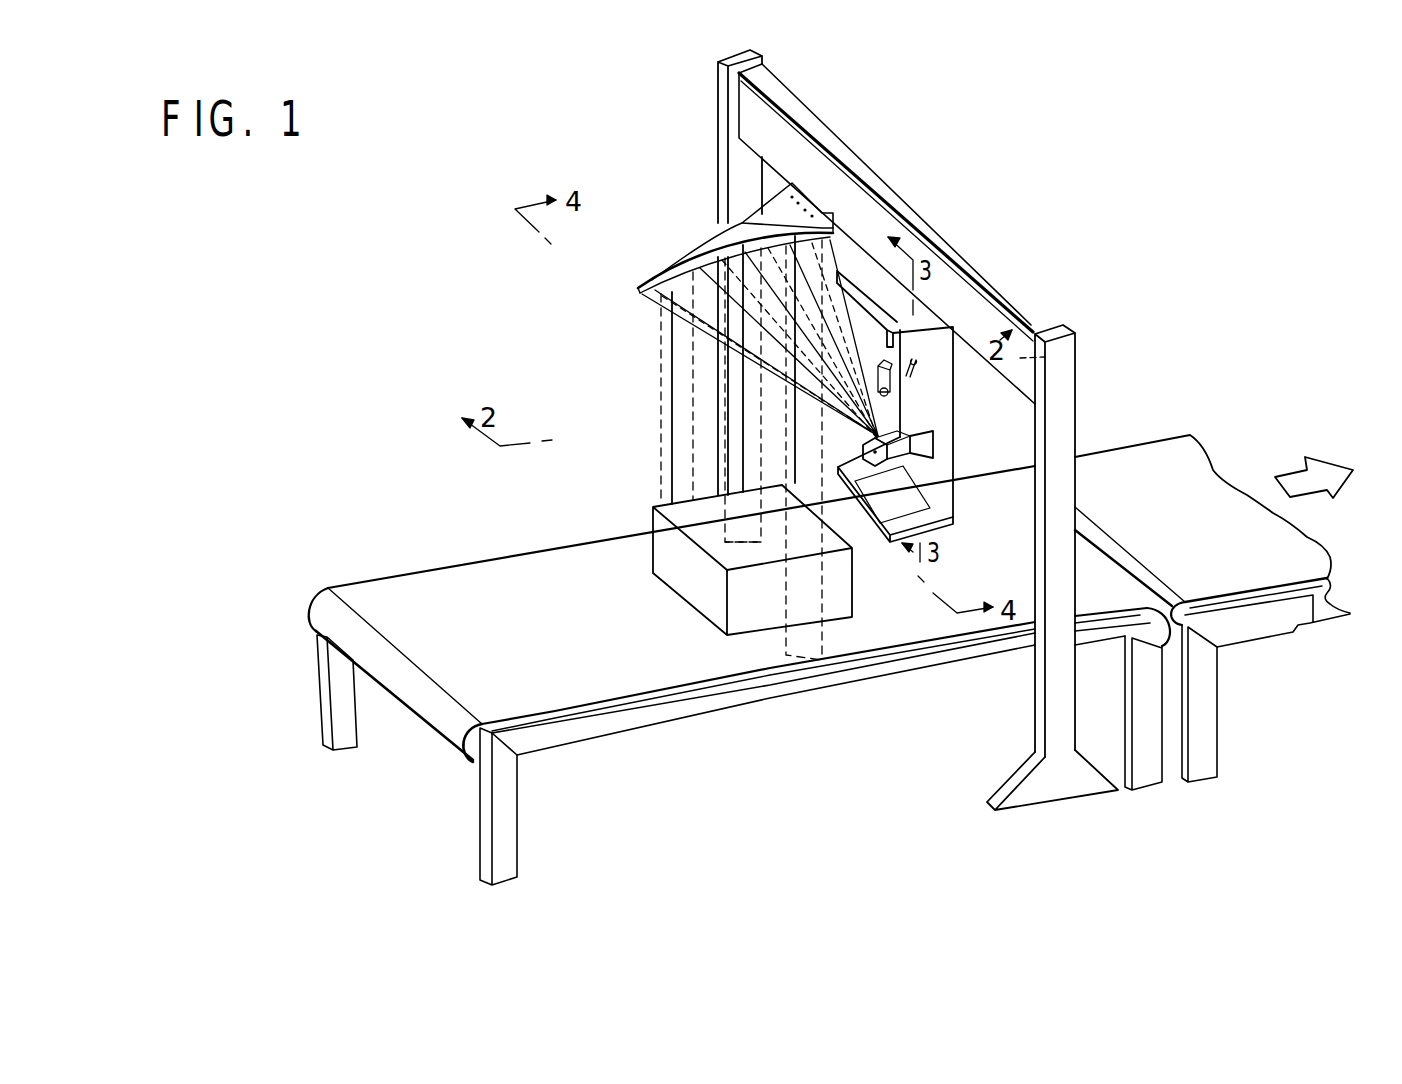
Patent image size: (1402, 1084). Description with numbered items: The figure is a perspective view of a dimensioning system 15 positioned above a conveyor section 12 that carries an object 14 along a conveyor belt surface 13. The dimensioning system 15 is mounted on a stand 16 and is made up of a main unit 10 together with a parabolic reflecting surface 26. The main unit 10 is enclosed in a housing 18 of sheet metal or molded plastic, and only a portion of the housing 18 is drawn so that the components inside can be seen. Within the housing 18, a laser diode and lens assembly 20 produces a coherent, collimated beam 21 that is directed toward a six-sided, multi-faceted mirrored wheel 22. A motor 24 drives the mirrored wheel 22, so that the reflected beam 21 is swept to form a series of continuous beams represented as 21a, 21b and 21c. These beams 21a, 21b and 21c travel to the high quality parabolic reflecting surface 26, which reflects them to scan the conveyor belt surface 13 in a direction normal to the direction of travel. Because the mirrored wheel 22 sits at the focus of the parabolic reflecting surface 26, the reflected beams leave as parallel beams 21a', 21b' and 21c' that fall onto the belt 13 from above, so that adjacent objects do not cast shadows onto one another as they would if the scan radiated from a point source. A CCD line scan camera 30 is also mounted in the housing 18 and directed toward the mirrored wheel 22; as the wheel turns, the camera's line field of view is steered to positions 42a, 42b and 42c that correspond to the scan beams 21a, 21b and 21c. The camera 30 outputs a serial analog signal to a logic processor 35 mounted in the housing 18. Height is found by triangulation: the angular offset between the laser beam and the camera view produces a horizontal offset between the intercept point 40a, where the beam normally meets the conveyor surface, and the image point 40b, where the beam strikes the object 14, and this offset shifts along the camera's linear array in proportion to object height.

The main unit 10 is at (960, 480).
The conveyor section 12 is at (553, 738).
The conveyor belt surface 13 is at (655, 668).
The object 14 is at (840, 612).
The dimensioning system 15 is at (962, 120).
The stand 16 is at (718, 100).
The housing 18 is at (953, 437).
The laser diode and lens assembly 20 is at (897, 322).
The coherent collimated beam 21 is at (900, 415).
The continuous scan beam 21a is at (793, 328).
The continuous scan beam 21b is at (806, 343).
The continuous scan beam 21c is at (752, 360).
The parallel beam 21a' is at (848, 450).
The parallel beam 21b' is at (712, 453).
The parallel beam 21c' is at (643, 386).
The mirrored wheel 22 is at (868, 447).
The motor 24 is at (933, 448).
The parabolic reflecting surface 26 is at (746, 222).
The CCD line scan camera 30 is at (867, 309).
The logic processor 35 is at (900, 507).
The intercept point 40a is at (654, 500).
The image point 40b is at (727, 578).
The line field of view position 42a is at (820, 397).
The line field of view position 42b is at (760, 360).
The line field of view position 42c is at (696, 289).